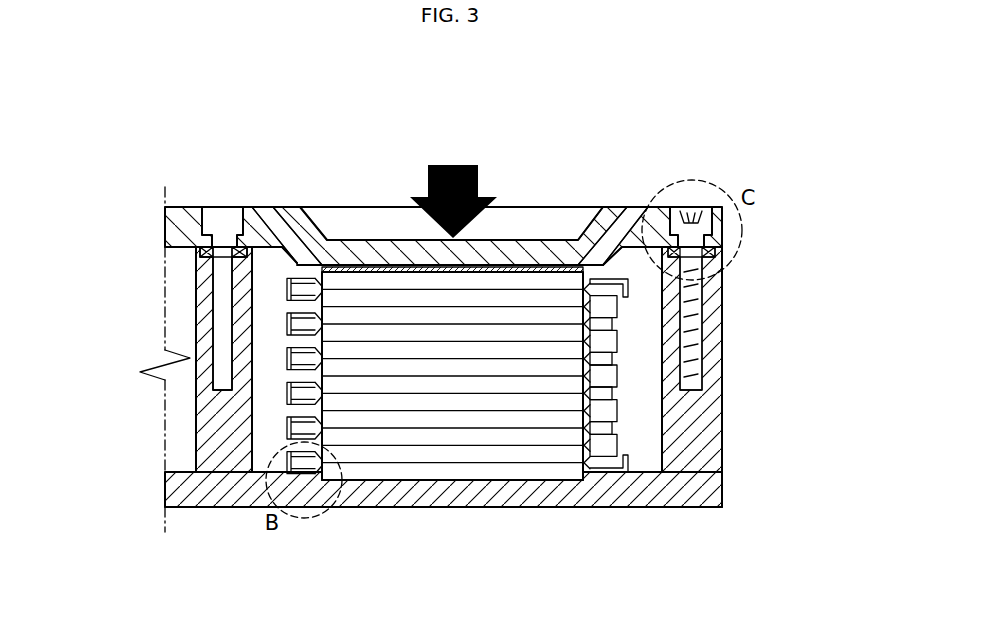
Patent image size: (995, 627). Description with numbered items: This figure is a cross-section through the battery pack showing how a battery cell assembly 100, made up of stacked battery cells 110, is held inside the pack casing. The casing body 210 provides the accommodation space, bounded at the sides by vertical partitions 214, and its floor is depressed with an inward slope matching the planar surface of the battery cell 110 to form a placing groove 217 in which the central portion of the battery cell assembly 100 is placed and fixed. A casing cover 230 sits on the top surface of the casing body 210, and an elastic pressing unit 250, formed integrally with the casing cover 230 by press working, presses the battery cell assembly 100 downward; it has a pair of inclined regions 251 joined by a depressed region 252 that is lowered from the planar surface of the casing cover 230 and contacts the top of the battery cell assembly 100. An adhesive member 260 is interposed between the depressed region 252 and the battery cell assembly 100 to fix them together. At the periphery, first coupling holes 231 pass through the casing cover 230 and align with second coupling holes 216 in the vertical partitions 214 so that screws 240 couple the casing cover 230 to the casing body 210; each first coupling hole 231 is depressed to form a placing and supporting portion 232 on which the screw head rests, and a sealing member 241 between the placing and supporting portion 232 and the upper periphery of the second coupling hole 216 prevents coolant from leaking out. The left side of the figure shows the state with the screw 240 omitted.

The battery cell assembly 100 is at (468, 440).
The battery cell 110 is at (540, 452).
The casing body 210 is at (433, 508).
The vertical partition 214 is at (222, 430).
The second coupling hole 216 is at (222, 322).
The placing groove 217 is at (308, 484).
The casing cover 230 is at (622, 207).
The first coupling hole 231 is at (223, 206).
The placing and supporting portion 232 is at (200, 245).
The screw 240 is at (695, 322).
The sealing member 241 is at (196, 271).
The elastic pressing unit 250 is at (313, 118).
The inclined region 251 is at (317, 218).
The depressed region 252 is at (380, 248).
The adhesive member 260 is at (535, 266).